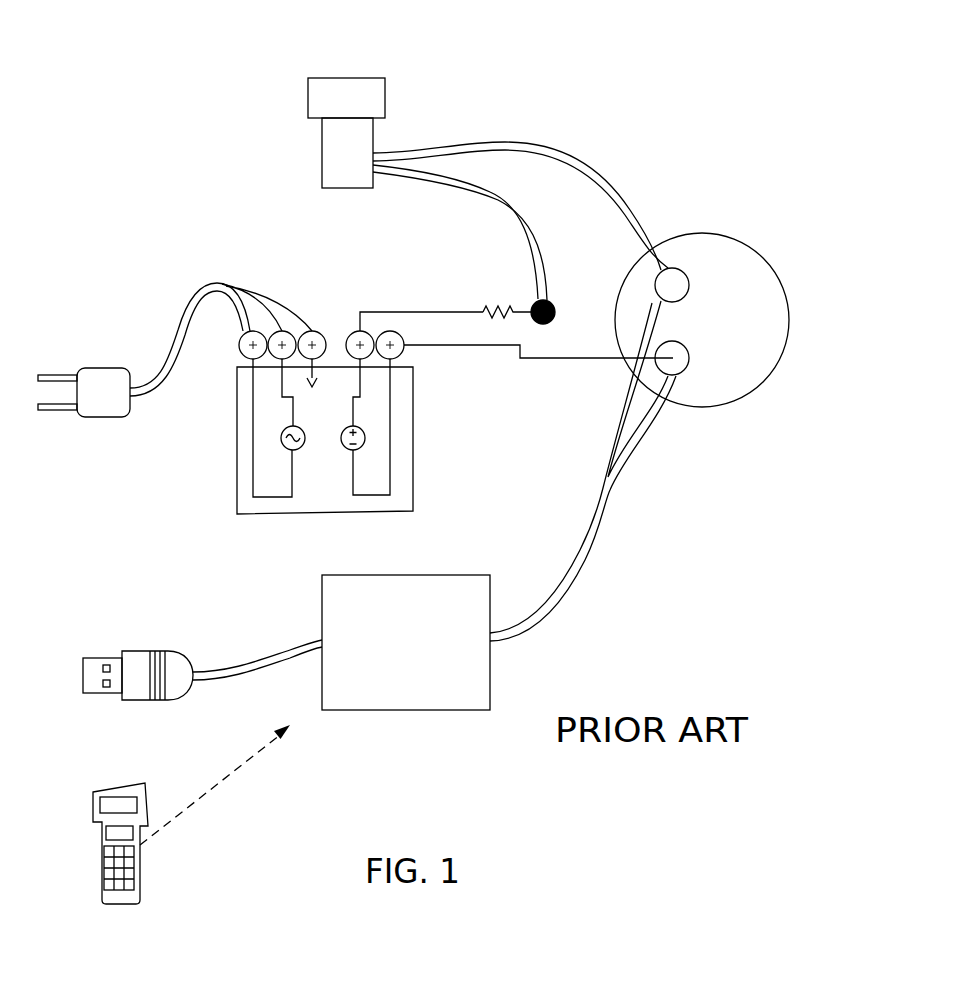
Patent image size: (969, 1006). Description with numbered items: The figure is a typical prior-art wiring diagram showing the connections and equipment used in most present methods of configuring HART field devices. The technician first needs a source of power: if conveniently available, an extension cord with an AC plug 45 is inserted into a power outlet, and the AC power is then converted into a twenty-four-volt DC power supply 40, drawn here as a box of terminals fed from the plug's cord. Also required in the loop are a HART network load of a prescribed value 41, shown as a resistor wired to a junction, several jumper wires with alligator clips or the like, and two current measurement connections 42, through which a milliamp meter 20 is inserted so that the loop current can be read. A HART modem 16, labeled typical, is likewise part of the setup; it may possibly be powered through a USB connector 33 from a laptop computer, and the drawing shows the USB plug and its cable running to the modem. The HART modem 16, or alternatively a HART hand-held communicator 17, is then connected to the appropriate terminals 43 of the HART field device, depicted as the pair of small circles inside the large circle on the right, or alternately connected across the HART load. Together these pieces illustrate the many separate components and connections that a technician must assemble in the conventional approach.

The milliamp meter 20 is at (348, 77).
The current measurement connections 42 is at (557, 290).
The HART network load 41 is at (519, 302).
The 24-volt DC power supply 40 is at (390, 329).
The terminals 43 is at (690, 303).
The AC plug 45 is at (103, 366).
The USB connector 33 is at (140, 650).
The HART modem 16 is at (444, 711).
The HART hand-held communicator 17 is at (113, 786).